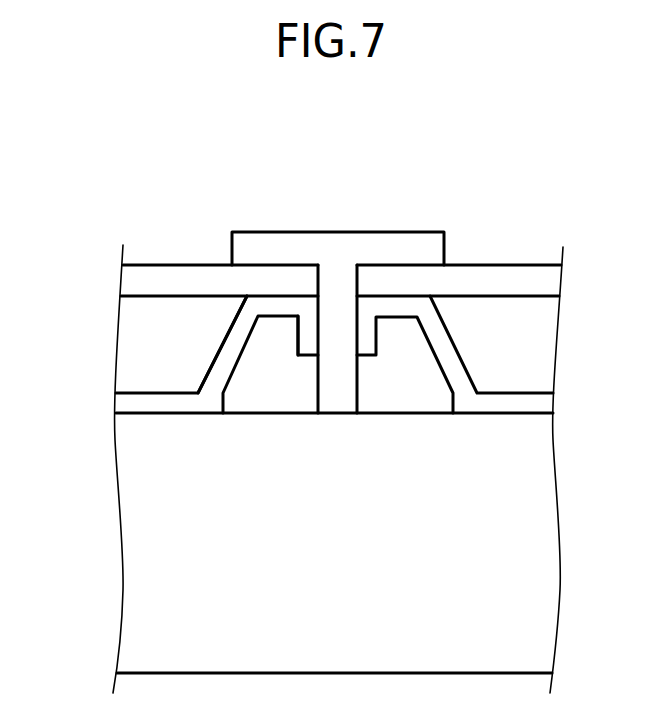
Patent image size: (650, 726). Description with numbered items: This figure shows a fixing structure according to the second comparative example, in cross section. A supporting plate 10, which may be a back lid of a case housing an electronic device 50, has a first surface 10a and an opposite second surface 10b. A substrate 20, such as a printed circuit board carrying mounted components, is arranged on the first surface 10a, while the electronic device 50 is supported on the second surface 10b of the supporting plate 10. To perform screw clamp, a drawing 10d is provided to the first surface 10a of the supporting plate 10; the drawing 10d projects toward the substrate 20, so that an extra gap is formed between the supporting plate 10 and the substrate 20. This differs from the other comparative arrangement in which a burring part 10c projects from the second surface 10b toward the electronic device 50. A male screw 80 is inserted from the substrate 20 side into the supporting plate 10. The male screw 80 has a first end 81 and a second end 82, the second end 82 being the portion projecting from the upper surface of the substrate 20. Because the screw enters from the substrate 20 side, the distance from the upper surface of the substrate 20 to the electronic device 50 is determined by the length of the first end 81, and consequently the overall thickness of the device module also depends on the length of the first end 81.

The supporting plate 10 is at (533, 403).
The first surface 10a is at (152, 393).
The second surface 10b is at (152, 414).
The burring part 10c is at (297, 342).
The drawing 10d is at (221, 342).
The substrate 20 is at (533, 280).
The electronic device 50 is at (533, 519).
The male screw 80 is at (338, 274).
The first end 81 is at (340, 397).
The second end 82 is at (341, 248).